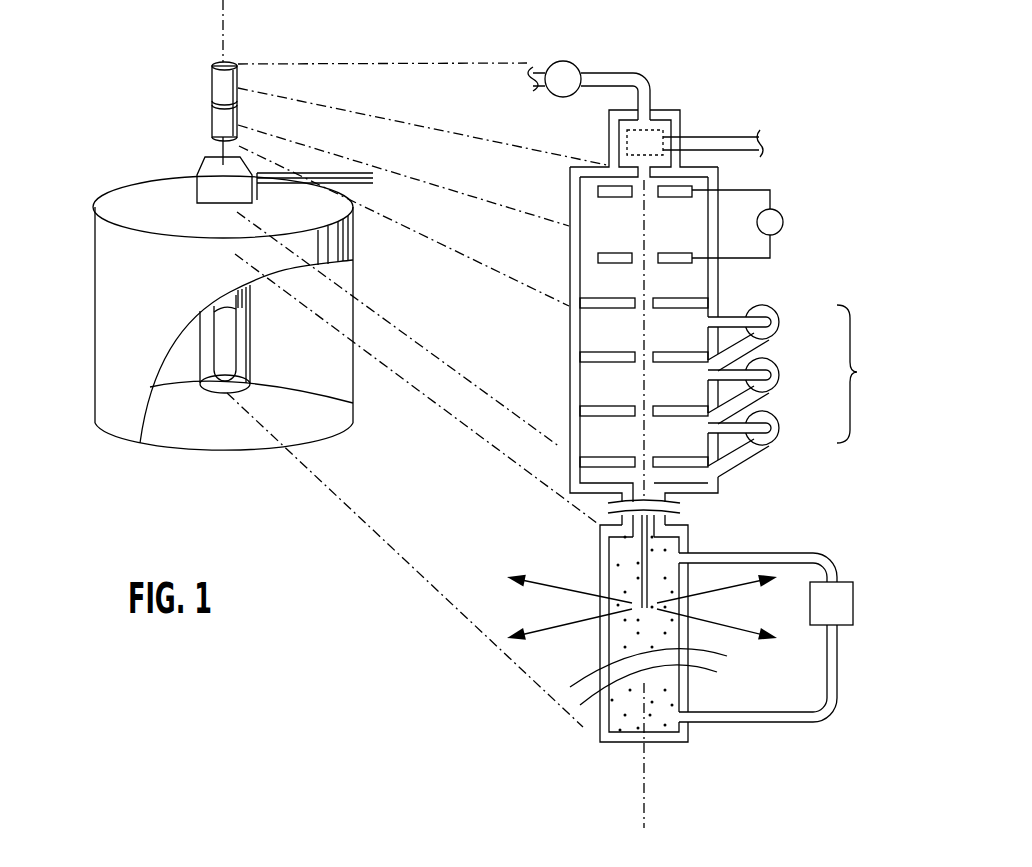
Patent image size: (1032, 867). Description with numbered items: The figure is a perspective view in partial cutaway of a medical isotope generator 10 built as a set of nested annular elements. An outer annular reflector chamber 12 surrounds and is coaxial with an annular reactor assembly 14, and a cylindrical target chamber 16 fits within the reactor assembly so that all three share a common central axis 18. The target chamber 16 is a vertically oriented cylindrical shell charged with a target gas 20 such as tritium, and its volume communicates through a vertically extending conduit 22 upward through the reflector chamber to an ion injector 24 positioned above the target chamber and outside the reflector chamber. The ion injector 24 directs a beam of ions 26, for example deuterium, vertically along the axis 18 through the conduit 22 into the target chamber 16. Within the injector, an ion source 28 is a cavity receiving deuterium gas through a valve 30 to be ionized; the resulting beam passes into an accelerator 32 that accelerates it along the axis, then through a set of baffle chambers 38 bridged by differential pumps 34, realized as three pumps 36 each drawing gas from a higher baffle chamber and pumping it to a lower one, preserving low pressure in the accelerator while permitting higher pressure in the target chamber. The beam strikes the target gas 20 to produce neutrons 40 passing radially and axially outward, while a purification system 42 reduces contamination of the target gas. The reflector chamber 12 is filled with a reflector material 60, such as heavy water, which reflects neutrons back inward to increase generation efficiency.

The medical isotope generator 10 is at (152, 43).
The outer annular reflector chamber 12 is at (175, 372).
The annular reactor assembly 14 is at (207, 353).
The target chamber 16 is at (247, 353).
The central axis 18 is at (224, 36).
The target gas 20 is at (645, 717).
The conduit 22 is at (213, 153).
The ion injector 24 is at (197, 67).
The beam of ions 26 is at (645, 272).
The ion source 28 is at (680, 110).
The valve 30 is at (566, 61).
The accelerator 32 is at (600, 232).
The differential pumps 34 is at (858, 372).
The pumps 36 is at (773, 447).
The baffle chambers 38 is at (580, 473).
The neutrons 40 is at (563, 620).
The purification system 42 is at (855, 598).
The reflector material 60 is at (167, 425).